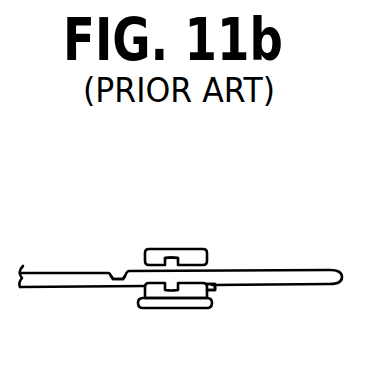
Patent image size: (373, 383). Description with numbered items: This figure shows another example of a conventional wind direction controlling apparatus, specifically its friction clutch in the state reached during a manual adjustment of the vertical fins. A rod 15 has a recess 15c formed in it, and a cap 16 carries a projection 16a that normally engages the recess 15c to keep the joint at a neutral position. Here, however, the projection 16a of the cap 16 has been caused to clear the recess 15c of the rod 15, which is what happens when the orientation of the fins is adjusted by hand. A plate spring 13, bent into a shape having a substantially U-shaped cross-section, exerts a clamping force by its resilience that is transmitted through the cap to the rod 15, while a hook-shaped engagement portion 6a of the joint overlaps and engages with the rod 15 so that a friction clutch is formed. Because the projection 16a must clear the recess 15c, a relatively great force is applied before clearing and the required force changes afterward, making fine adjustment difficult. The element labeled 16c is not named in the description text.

The rod 15 is at (308, 269).
The recess 15c is at (118, 277).
The cap 16 is at (195, 249).
The projection 16a is at (173, 270).
The lower nut 16c is at (172, 284).
The plate spring 13 is at (198, 308).
The hook-shaped engagement portion 6a is at (214, 290).